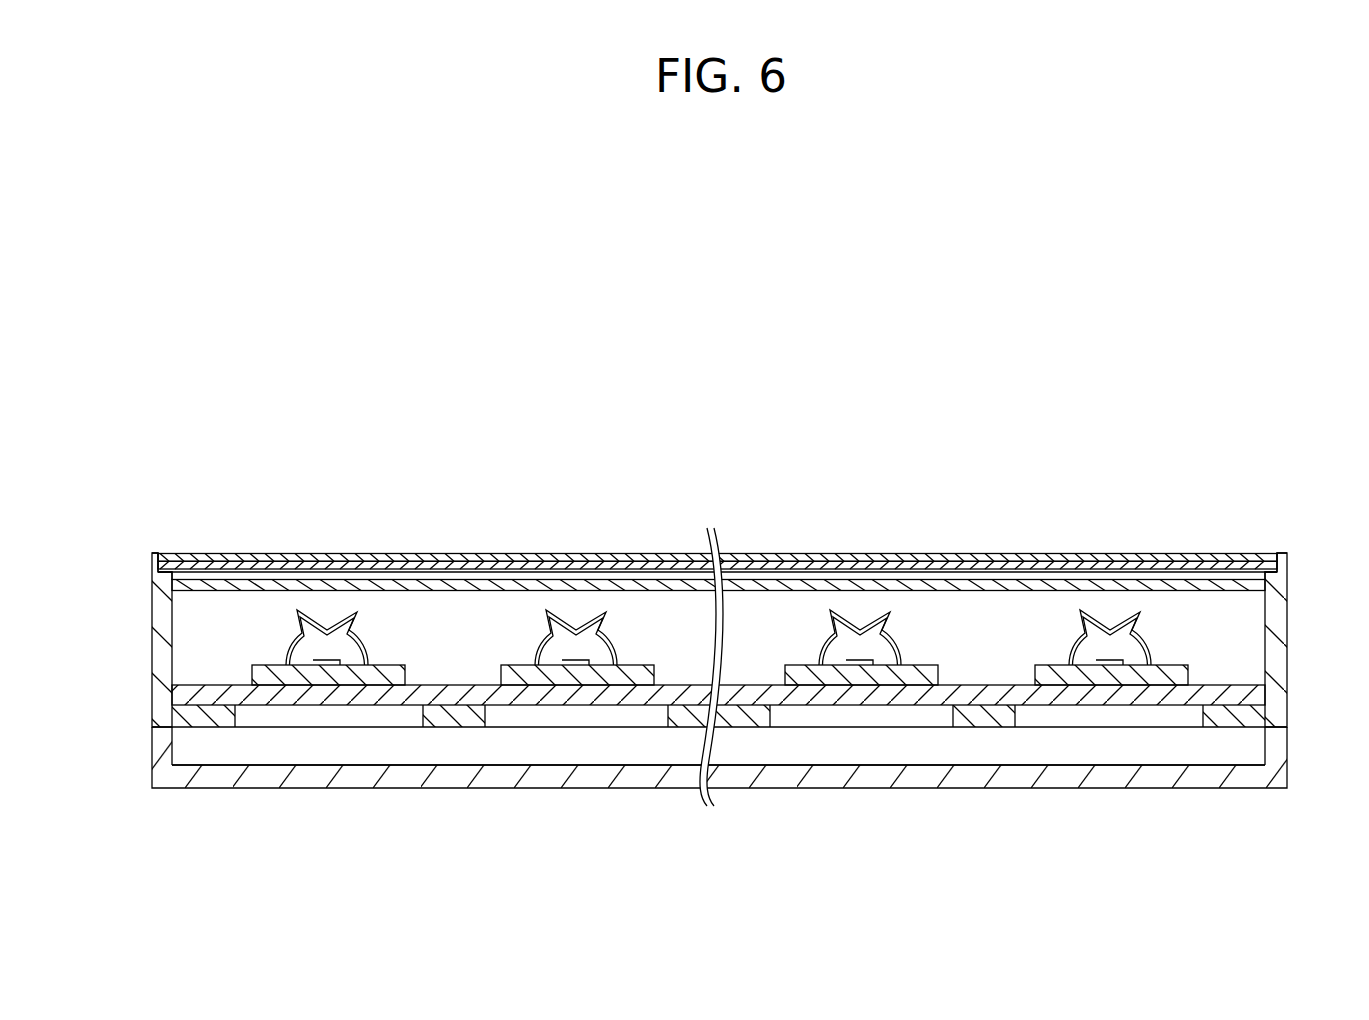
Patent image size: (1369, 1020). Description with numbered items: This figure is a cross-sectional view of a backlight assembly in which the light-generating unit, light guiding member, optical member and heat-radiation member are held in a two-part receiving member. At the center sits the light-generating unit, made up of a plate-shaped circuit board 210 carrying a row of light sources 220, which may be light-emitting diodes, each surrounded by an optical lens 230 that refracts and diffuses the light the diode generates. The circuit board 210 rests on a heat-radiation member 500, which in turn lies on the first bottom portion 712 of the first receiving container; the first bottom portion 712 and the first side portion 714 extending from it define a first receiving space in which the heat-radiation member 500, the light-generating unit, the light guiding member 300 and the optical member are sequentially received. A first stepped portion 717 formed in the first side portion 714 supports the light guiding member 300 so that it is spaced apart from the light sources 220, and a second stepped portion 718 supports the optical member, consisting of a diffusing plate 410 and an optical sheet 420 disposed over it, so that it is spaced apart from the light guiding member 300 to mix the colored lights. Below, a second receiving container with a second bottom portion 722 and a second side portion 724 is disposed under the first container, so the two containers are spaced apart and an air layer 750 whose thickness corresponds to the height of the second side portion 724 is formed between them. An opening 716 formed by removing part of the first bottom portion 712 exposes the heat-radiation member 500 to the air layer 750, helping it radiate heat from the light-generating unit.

The circuit board 210 is at (1188, 668).
The light source 220 is at (1148, 634).
The optical lens 230 is at (326, 628).
The light guiding member 300 is at (1228, 586).
The diffusing plate 410 is at (1168, 566).
The optical sheet 420 is at (1108, 556).
The heat-radiation member 500 is at (1262, 690).
The first bottom portion 712 is at (1223, 713).
The first side portion 714 is at (1272, 611).
The opening 716 is at (302, 723).
The first stepped portion 717 is at (170, 582).
The second stepped portion 718 is at (158, 561).
The second bottom portion 722 is at (452, 773).
The second side portion 724 is at (168, 753).
The air layer 750 is at (1190, 756).